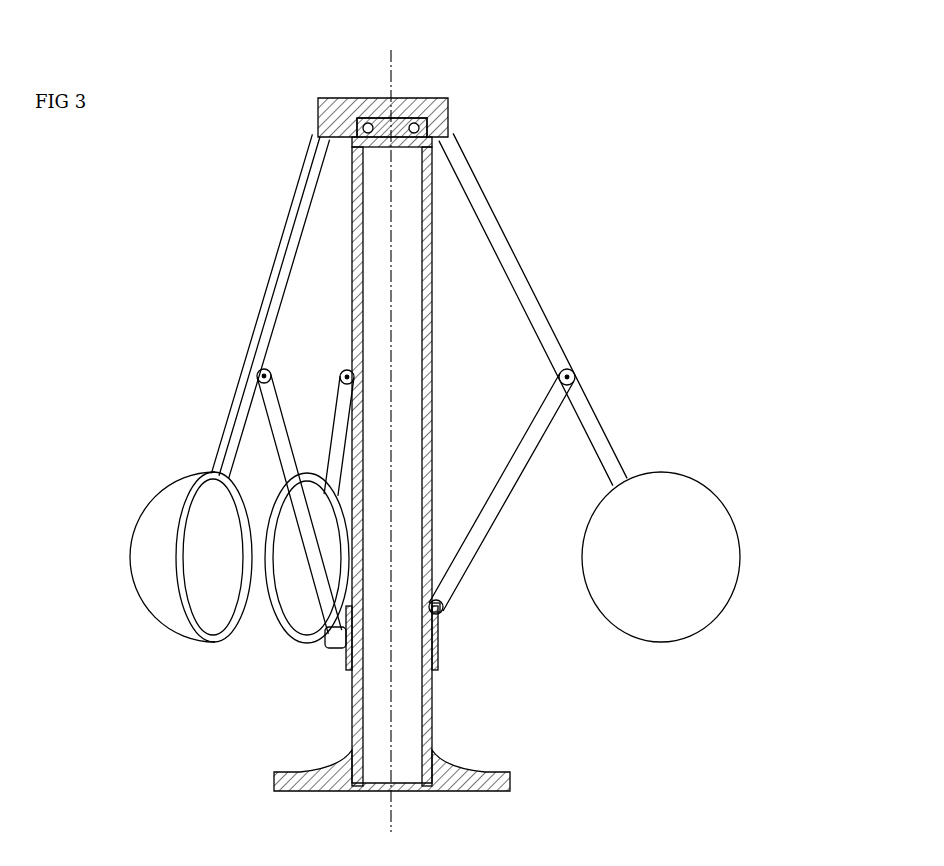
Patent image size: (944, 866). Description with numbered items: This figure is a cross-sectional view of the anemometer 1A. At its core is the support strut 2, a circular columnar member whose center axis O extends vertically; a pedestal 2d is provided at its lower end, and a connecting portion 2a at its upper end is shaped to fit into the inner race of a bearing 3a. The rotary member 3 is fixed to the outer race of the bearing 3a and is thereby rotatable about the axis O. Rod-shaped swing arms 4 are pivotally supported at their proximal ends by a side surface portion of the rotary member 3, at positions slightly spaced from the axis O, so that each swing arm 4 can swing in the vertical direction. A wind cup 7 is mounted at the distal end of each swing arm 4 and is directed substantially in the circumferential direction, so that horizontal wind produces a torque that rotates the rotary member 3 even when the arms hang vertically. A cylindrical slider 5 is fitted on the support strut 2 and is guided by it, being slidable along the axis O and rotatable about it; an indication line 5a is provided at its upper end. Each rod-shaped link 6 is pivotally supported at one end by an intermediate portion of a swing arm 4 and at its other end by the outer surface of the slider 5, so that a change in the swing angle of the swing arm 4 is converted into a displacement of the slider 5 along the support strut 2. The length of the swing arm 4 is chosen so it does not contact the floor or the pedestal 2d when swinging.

The anemometer 1A is at (490, 66).
The support strut 2 is at (432, 372).
The connecting portion 2a is at (396, 100).
The pedestal 2d is at (485, 790).
The rotary member 3 is at (318, 100).
The bearing 3a is at (366, 117).
The swing arm 4 is at (288, 272).
The slider 5 is at (346, 660).
The indication line 5a is at (330, 631).
The link 6 is at (282, 433).
The wind cup 7 is at (155, 515).
The axis O is at (392, 805).